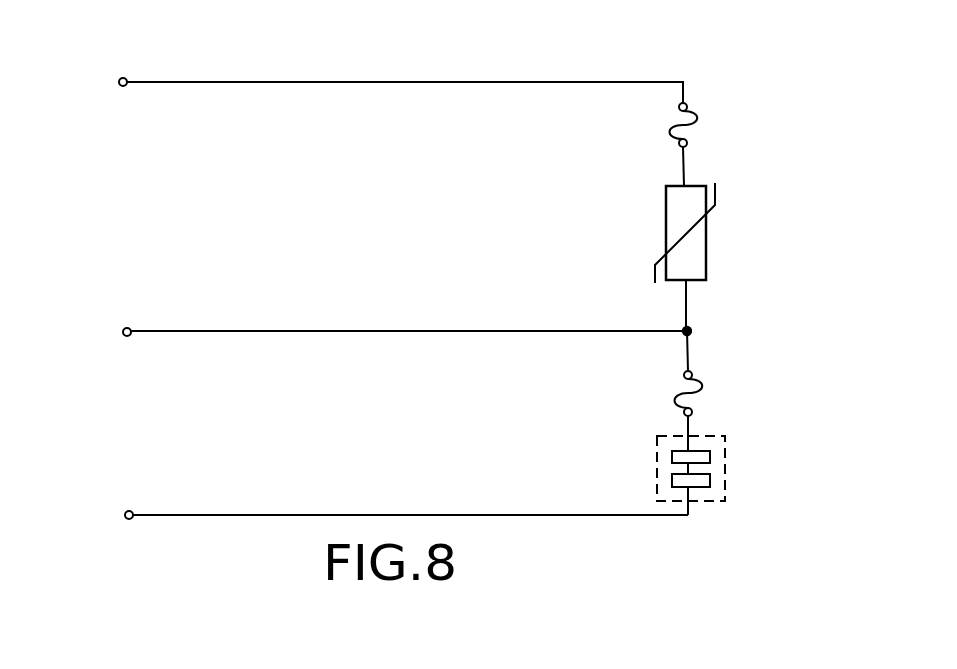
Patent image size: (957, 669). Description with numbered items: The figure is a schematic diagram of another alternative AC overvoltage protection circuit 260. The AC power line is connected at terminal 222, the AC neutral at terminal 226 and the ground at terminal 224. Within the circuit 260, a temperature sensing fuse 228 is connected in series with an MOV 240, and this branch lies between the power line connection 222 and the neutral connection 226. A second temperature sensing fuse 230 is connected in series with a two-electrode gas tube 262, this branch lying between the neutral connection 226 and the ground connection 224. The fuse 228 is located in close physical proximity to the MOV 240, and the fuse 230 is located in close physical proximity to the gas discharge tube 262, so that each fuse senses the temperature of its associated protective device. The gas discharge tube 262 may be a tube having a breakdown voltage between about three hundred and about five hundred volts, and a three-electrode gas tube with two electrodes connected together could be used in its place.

The AC power line connection 222 is at (117, 82).
The ground connection 224 is at (122, 513).
The AC neutral connection 226 is at (120, 328).
The temperature sensing fuse 228 is at (672, 135).
The temperature sensing fuse 230 is at (700, 383).
The MOV 240 is at (667, 235).
The AC overvoltage protection circuit 260 is at (737, 122).
The two-electrode gas tube 262 is at (725, 473).